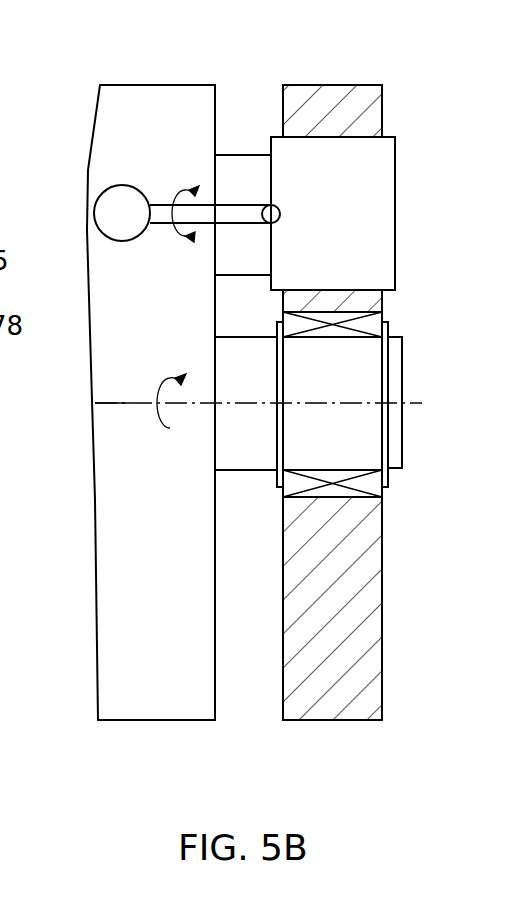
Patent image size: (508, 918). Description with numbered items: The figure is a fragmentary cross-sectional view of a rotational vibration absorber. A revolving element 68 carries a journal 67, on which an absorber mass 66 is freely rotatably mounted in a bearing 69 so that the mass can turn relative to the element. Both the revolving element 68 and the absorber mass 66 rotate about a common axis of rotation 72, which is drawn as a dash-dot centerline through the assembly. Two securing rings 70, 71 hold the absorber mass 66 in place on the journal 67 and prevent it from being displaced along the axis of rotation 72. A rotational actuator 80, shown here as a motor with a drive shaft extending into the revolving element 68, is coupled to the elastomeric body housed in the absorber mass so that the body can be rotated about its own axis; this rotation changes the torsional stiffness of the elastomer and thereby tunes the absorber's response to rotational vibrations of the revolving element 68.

The absorber mass 66 is at (358, 683).
The journal 67 is at (237, 437).
The revolving element 68 is at (160, 690).
The bearing 69 is at (337, 323).
The securing ring 70 is at (388, 478).
The securing ring 71 is at (277, 480).
The axis of rotation 72 is at (125, 405).
The rotational actuator 80 is at (125, 185).